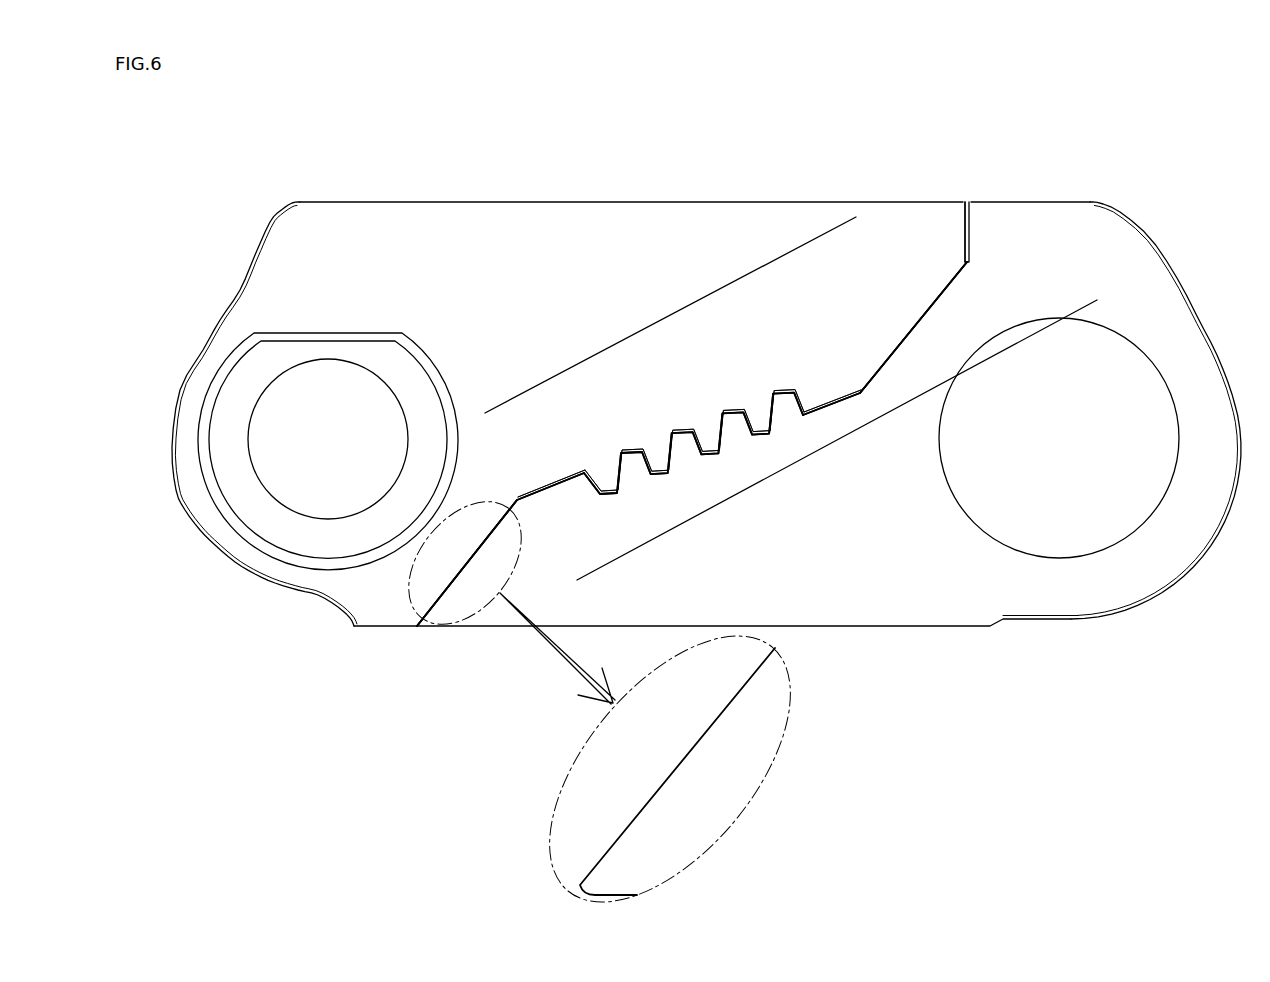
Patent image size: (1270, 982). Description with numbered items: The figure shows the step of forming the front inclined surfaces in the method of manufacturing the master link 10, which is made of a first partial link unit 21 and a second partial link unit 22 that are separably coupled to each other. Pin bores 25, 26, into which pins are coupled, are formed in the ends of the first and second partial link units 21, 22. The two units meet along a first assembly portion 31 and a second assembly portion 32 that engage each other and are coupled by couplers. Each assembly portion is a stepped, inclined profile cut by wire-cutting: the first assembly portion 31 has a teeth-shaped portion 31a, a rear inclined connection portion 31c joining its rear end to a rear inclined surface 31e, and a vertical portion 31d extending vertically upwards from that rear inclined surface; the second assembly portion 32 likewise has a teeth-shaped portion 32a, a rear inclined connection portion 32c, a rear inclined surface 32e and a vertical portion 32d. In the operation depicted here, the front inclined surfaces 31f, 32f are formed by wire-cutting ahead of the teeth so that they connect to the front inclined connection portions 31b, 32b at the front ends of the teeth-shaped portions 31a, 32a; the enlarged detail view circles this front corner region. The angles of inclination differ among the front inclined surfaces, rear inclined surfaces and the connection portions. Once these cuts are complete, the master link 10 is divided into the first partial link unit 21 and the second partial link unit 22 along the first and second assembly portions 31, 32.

The master link 10 is at (1052, 168).
The first partial link unit 21 is at (416, 225).
The second partial link unit 22 is at (921, 608).
The pin bore 25 is at (330, 463).
The pin bore 26 is at (1071, 489).
The first assembly portion 31 is at (677, 311).
The teeth-shaped portion 31a is at (685, 430).
The front inclined connection portion 31b is at (540, 497).
The rear inclined connection portion 31c is at (855, 400).
The vertical portion 31d is at (966, 222).
The rear inclined surface 31e is at (897, 347).
The front inclined surface 31f is at (492, 537).
The second assembly portion 32 is at (852, 436).
The teeth-shaped portion 32a is at (667, 457).
The front inclined connection portion 32b is at (578, 468).
The rear inclined connection portion 32c is at (803, 413).
The vertical portion 32d is at (968, 264).
The rear inclined surface 32e is at (925, 296).
The front inclined surface 32f is at (446, 592).